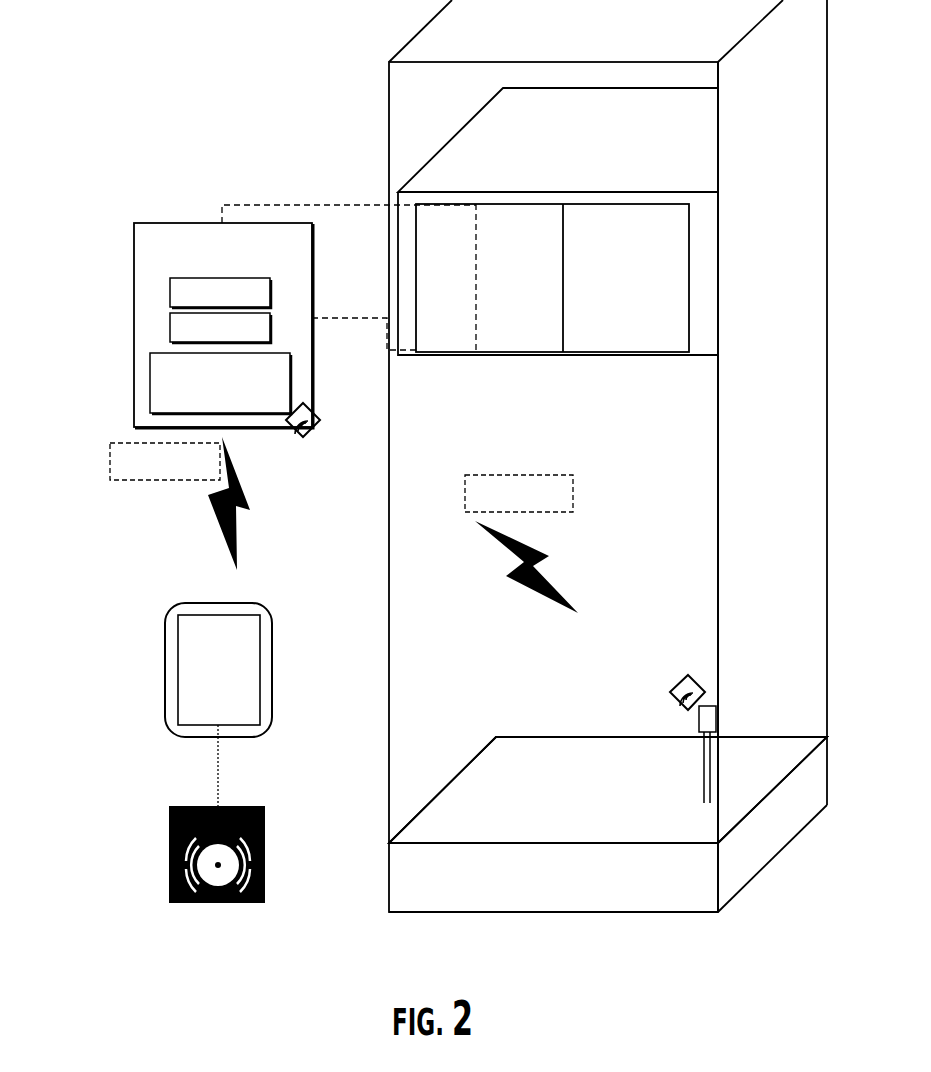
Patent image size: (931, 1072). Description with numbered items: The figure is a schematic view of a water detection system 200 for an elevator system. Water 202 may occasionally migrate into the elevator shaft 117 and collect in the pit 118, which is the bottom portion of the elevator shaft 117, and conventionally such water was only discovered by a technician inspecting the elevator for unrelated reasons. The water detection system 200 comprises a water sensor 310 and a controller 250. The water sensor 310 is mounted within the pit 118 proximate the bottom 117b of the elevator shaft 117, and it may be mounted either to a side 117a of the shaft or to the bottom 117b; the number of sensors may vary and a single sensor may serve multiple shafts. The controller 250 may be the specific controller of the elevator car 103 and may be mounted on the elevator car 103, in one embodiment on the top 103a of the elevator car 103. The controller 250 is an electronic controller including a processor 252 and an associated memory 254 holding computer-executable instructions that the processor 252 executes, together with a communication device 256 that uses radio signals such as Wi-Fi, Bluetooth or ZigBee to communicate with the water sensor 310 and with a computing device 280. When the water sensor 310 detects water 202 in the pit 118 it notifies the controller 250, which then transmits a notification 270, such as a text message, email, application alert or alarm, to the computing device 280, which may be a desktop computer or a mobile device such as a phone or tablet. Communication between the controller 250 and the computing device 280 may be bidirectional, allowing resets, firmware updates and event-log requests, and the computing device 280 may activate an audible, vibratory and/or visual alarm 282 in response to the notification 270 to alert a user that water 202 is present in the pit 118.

The water detection system 200 is at (145, 114).
The elevator car 103 is at (710, 265).
The top of the elevator car 103a is at (565, 113).
The elevator shaft 117 is at (458, 632).
The side of the elevator shaft 117a is at (718, 545).
The bottom of the elevator shaft 117b is at (643, 913).
The pit 118 is at (437, 760).
The water 202 is at (573, 802).
The controller 250 is at (134, 252).
The processor 252 is at (170, 292).
The memory 254 is at (170, 328).
The communication device 256 is at (150, 375).
The notification 270 is at (465, 482).
The computing device 280 is at (165, 682).
The alarm 282 is at (169, 827).
The water sensor 310 is at (650, 675).